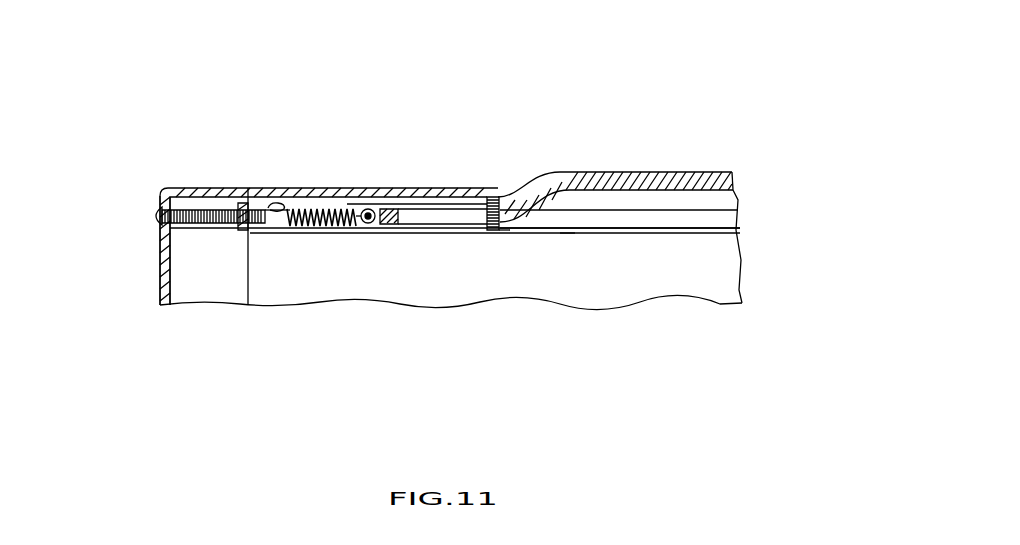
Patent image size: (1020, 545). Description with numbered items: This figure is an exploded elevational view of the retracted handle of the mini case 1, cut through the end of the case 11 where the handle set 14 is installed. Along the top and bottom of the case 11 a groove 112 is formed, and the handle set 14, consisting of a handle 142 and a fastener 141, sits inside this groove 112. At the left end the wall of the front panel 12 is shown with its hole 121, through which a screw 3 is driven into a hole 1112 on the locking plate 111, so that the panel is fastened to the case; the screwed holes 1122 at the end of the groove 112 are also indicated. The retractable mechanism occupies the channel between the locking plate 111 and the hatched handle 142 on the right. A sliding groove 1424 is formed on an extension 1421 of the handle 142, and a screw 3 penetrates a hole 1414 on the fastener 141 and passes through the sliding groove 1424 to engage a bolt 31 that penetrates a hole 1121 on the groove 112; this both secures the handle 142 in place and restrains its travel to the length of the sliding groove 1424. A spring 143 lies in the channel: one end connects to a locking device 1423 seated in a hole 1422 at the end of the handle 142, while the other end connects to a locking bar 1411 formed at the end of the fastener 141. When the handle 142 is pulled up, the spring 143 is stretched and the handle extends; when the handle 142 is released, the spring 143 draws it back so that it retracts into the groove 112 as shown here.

The mini case 1 is at (140, 117).
The screw 3 is at (155, 210).
The case 11 is at (672, 275).
The front panel 12 is at (162, 272).
The handle set 14 is at (682, 165).
The bolt 31 is at (487, 232).
The locking plate 111 is at (240, 196).
The groove 112 is at (708, 198).
The hole 121 is at (157, 228).
The fastener 141 is at (430, 204).
The handle 142 is at (600, 180).
The spring 143 is at (300, 208).
The hole 1112 is at (241, 227).
The hole 1121 is at (508, 232).
The screwed hole 1122 is at (705, 220).
The locking bar 1411 is at (274, 203).
The hole 1414 is at (495, 197).
The extension 1421 is at (563, 237).
The hole 1422 is at (388, 208).
The locking device 1423 is at (368, 210).
The sliding groove 1424 is at (435, 214).